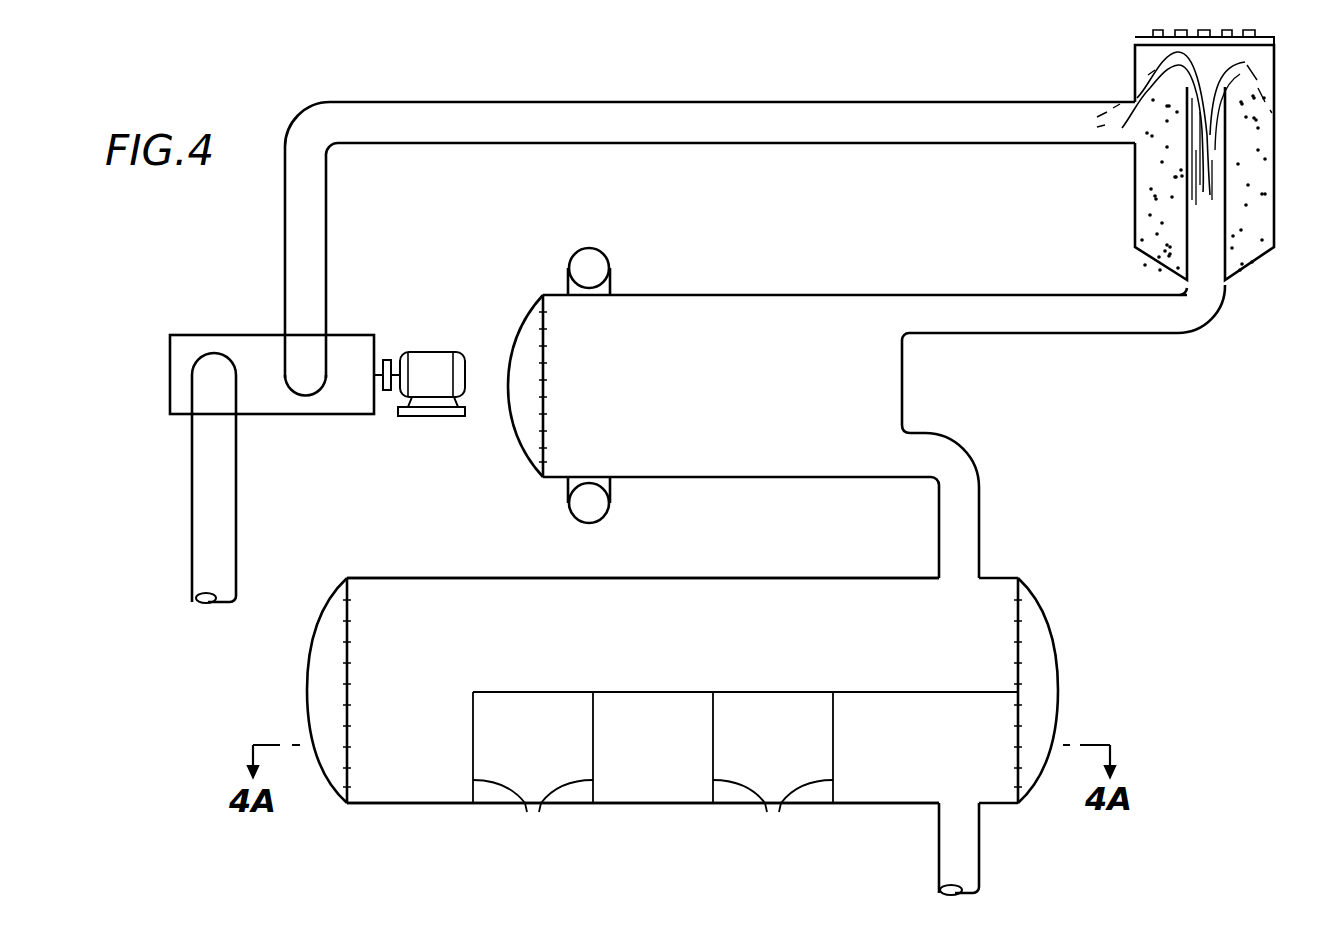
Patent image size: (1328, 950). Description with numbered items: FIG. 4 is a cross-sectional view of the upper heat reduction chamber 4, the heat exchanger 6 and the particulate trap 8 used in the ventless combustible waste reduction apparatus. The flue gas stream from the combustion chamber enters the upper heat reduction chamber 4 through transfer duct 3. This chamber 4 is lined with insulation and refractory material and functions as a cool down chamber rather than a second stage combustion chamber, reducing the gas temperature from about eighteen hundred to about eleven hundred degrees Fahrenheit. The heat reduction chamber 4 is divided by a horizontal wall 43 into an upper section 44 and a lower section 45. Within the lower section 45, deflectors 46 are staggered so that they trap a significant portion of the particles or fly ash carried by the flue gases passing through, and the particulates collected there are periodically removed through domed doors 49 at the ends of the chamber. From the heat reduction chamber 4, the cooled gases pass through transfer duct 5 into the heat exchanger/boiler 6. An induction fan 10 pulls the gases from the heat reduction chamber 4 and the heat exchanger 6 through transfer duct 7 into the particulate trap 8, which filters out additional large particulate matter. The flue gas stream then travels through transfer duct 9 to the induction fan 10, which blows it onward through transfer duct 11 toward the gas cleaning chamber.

The transfer duct 3 is at (975, 867).
The upper heat reduction chamber 4 is at (686, 695).
The transfer duct 5 is at (973, 508).
The heat exchanger/boiler 6 is at (727, 295).
The transfer duct 7 is at (1030, 333).
The particulate trap 8 is at (1274, 140).
The transfer duct 9 is at (690, 102).
The induction fan 10 is at (446, 352).
The transfer duct 11 is at (200, 503).
The horizontal wall 43 is at (772, 692).
The upper section 44 is at (472, 579).
The lower section 45 is at (378, 795).
The deflectors 46 is at (653, 813).
The domed doors 49 is at (307, 692).